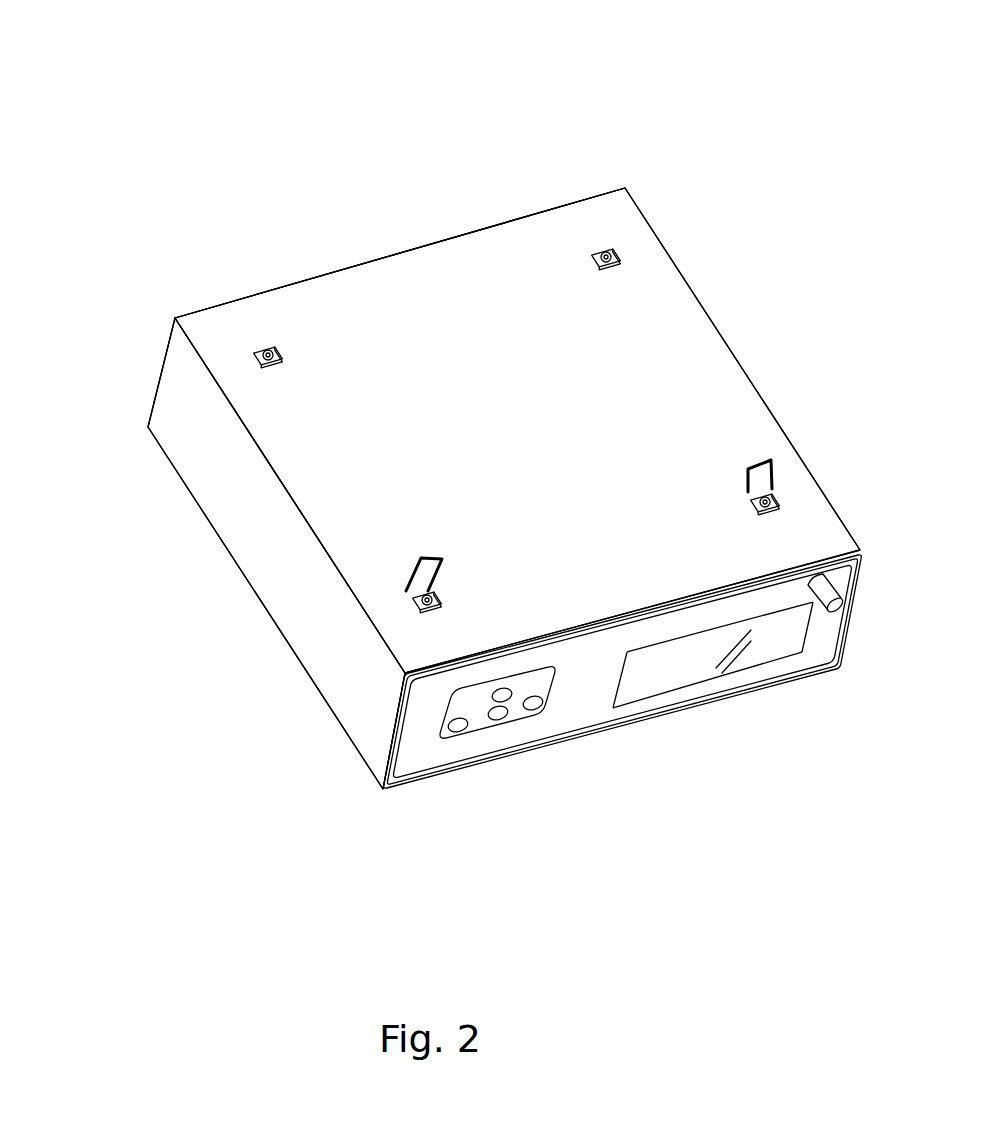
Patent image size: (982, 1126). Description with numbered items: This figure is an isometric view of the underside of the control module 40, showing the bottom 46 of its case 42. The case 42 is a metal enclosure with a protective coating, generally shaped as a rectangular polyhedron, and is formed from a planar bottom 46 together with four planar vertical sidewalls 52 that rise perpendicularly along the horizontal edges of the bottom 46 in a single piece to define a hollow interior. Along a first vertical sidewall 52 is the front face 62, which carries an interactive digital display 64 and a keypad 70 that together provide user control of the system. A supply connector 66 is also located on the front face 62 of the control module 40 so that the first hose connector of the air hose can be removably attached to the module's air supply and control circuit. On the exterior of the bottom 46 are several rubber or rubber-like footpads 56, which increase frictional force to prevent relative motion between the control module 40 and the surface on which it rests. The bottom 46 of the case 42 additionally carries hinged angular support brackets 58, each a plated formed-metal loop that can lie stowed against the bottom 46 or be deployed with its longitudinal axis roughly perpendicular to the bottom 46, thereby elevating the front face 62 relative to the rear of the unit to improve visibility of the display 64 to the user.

The control module 40 is at (252, 178).
The case 42 is at (222, 303).
The bottom 46 is at (700, 365).
The sidewall 52 is at (238, 522).
The footpad 56 is at (255, 357).
The angular support bracket 58 is at (413, 567).
The front face 62 is at (583, 692).
The display 64 is at (700, 660).
The supply connector 66 is at (837, 660).
The keypad 70 is at (467, 742).